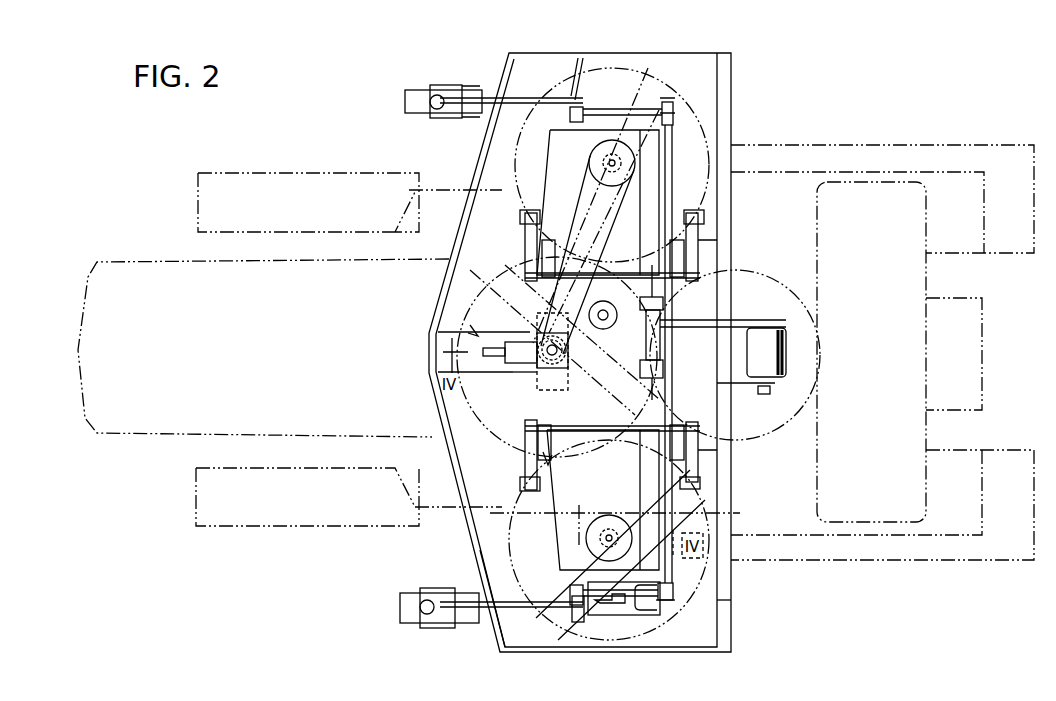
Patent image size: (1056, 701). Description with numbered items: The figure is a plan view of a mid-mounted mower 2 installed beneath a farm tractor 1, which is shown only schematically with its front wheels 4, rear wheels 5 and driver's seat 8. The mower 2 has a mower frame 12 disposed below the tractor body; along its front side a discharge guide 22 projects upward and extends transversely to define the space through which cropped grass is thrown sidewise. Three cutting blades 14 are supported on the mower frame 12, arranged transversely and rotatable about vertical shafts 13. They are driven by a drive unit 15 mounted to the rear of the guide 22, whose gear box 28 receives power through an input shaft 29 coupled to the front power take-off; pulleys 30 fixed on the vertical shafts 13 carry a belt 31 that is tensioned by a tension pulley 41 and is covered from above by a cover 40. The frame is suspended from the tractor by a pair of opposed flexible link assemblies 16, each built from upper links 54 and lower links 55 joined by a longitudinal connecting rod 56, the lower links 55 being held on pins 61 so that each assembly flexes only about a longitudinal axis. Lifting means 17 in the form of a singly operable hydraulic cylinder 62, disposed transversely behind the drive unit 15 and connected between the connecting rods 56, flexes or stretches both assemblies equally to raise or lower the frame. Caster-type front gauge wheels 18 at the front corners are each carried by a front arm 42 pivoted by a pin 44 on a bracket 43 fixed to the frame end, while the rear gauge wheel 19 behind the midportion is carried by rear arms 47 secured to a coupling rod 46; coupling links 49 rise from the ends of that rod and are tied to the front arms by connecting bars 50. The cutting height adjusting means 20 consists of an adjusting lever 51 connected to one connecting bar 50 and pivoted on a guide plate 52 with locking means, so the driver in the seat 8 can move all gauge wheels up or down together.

The farm tractor 1 is at (183, 257).
The mid-mounted mower 2 is at (648, 52).
The front wheels 4 is at (327, 172).
The rear wheels 5 is at (826, 145).
The driver's seat 8 is at (808, 398).
The mower frame 12 is at (710, 600).
The vertical shafts 13 is at (606, 168).
The cutting blades 14 is at (660, 92).
The drive unit 15 is at (535, 385).
The flexible link assemblies 16 is at (702, 238).
The lifting means 17 is at (668, 330).
The front gauge wheels 18 is at (422, 90).
The rear gauge wheel 19 is at (790, 352).
The cutting height adjusting means 20 is at (652, 612).
The discharge guide 22 is at (438, 314).
The gear box 28 is at (548, 335).
The input shaft 29 is at (515, 363).
The pulleys 30 is at (572, 196).
The belt 31 is at (562, 514).
The cover 40 is at (535, 505).
The tension pulley 41 is at (570, 350).
The front arm 42 is at (517, 98).
The bracket 43 is at (560, 662).
The pin 44 is at (570, 117).
The coupling rod 46 is at (672, 165).
The rear arms 47 is at (745, 320).
The coupling links 49 is at (674, 115).
The connecting bars 50 is at (615, 110).
The adjusting lever 51 is at (602, 615).
The guide plate 52 is at (626, 615).
The upper links 54 is at (548, 240).
The lower links 55 is at (525, 248).
The connecting rod 56 is at (626, 272).
The pin 61 is at (520, 217).
The hydraulic cylinder 62 is at (660, 348).